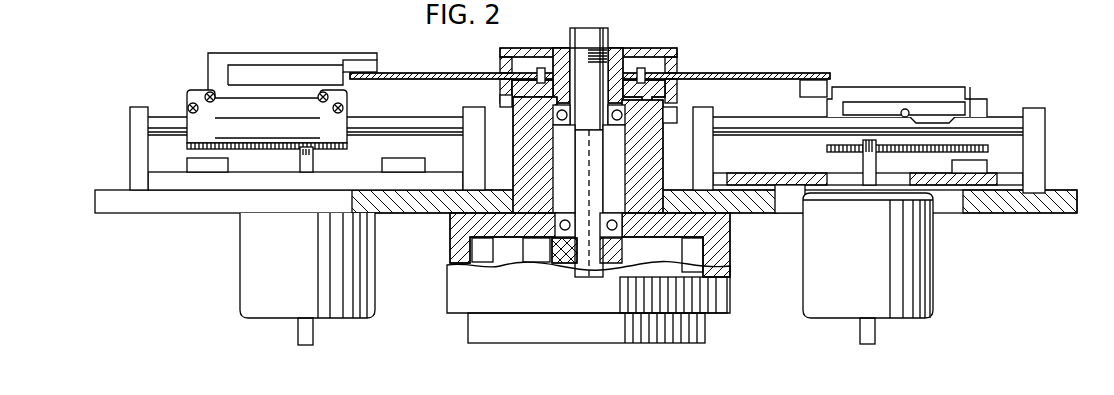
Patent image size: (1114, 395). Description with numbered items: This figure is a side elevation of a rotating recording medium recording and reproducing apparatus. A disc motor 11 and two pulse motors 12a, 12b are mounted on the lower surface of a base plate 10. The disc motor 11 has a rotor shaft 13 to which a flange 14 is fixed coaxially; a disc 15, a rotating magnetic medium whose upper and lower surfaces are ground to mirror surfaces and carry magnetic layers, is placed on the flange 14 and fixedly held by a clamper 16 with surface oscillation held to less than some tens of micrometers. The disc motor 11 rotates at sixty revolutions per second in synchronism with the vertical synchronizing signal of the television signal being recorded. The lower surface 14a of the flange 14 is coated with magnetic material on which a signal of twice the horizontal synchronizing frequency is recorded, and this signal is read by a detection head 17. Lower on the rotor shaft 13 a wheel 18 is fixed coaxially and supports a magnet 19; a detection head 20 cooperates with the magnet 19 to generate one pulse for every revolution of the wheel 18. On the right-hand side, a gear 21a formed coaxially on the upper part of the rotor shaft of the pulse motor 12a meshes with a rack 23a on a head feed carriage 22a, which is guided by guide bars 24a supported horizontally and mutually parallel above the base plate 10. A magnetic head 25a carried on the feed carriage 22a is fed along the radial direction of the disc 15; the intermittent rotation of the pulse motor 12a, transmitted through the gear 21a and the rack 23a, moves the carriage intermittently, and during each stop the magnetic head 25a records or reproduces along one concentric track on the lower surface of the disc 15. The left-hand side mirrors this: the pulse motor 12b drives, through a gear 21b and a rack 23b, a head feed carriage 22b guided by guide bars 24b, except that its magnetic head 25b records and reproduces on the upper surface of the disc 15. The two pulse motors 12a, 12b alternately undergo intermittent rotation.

The base plate 10 is at (1040, 214).
The disc motor 11 is at (448, 288).
The pulse motor 12a is at (933, 257).
The pulse motor 12b is at (243, 278).
The rotor shaft 13 is at (580, 72).
The flange 14 is at (673, 90).
The lower surface of the flange 14a is at (503, 107).
The disc 15 is at (762, 72).
The clamper 16 is at (657, 50).
The detection head 17 is at (673, 118).
The wheel 18 is at (622, 252).
The magnet 19 is at (568, 265).
The detection head 20 is at (532, 255).
The gear 21a is at (869, 140).
The gear 21b is at (318, 152).
The head feed carriage 22a is at (973, 87).
The head feed carriage 22b is at (210, 73).
The rack 23a is at (988, 148).
The rack 23b is at (187, 147).
The guide bars 24a is at (1007, 117).
The guide bars 24b is at (412, 122).
The magnetic head 25a is at (827, 82).
The magnetic head 25b is at (373, 66).